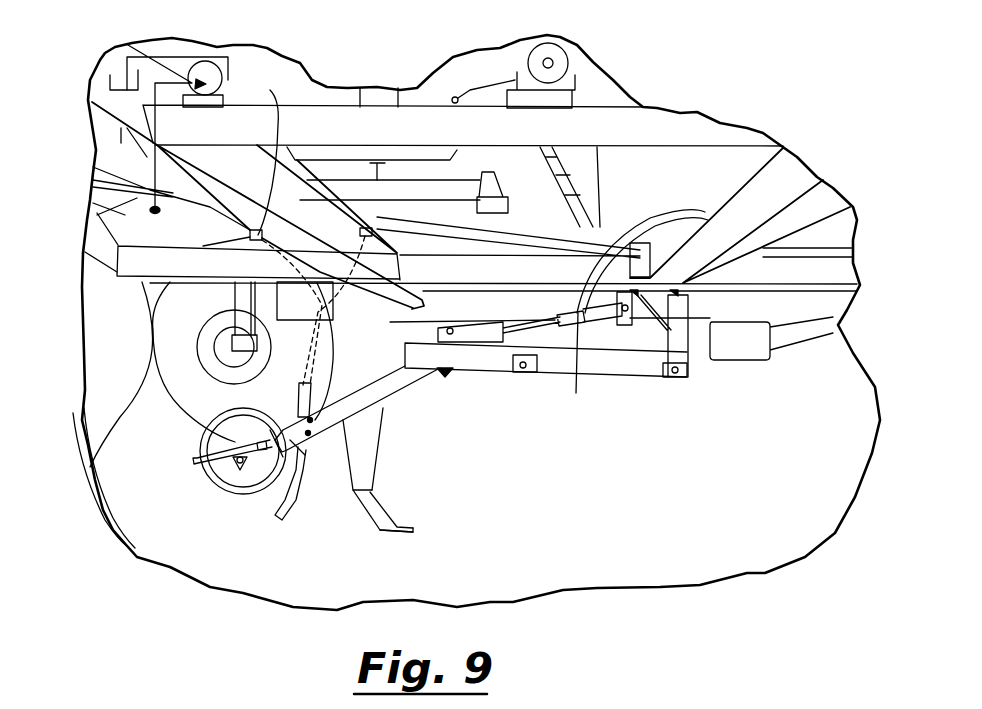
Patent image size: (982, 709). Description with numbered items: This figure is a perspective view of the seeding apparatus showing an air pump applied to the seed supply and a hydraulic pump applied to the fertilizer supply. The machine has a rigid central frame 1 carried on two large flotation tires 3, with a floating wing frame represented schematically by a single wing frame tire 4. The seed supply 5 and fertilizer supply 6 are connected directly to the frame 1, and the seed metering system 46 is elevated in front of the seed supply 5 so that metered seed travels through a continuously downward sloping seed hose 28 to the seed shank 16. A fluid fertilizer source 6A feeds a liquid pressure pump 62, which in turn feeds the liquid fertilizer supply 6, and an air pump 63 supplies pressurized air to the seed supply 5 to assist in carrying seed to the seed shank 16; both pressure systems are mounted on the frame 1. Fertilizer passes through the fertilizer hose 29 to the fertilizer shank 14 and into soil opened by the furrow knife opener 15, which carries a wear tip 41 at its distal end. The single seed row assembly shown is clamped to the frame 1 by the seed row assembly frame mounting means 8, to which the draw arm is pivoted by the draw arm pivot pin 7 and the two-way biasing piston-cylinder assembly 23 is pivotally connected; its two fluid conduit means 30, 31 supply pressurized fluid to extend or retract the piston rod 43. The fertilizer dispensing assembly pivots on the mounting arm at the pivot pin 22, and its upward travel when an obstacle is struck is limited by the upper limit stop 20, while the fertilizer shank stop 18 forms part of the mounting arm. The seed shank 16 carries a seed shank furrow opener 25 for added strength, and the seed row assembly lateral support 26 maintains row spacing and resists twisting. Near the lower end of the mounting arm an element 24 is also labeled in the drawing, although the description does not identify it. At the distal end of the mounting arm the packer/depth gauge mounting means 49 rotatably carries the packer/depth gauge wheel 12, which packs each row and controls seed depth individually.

The frame 1 is at (782, 177).
The flotation tires 3 is at (167, 332).
The wing frame tire 4 is at (127, 547).
The seed supply 5 is at (343, 103).
The fertilizer supply 6 is at (93, 204).
The fluid fertilizer source 6A is at (115, 76).
The draw arm pivot pin 7 is at (683, 367).
The seed row assembly frame mounting means 8 is at (678, 338).
The packer/depth gauge wheel 12 is at (223, 472).
The fertilizer shank 14 is at (370, 447).
The furrow knife opener 15 is at (373, 495).
The seed shank 16 is at (300, 450).
The fertilizer shank stop 18 is at (387, 403).
The upper limit stop 20 is at (407, 340).
The pivot pin 22 is at (443, 377).
The piston-cylinder assembly 23 is at (561, 364).
The pivot 24 is at (270, 430).
The seed shank furrow opener 25 is at (297, 490).
The seed row assembly lateral support 26 is at (637, 367).
The seed hose 28 is at (388, 173).
The fertilizer hose 29 is at (258, 157).
The fluid conduit means 30 is at (693, 223).
The fluid conduit means 31 is at (643, 223).
The wear tip 41 is at (407, 533).
The piston rod 43 is at (523, 330).
The seed metering system 46 is at (388, 100).
The packer/depth gauge mounting means 49 is at (260, 458).
The liquid pressure pump 62 is at (213, 58).
The air pump 63 is at (567, 62).